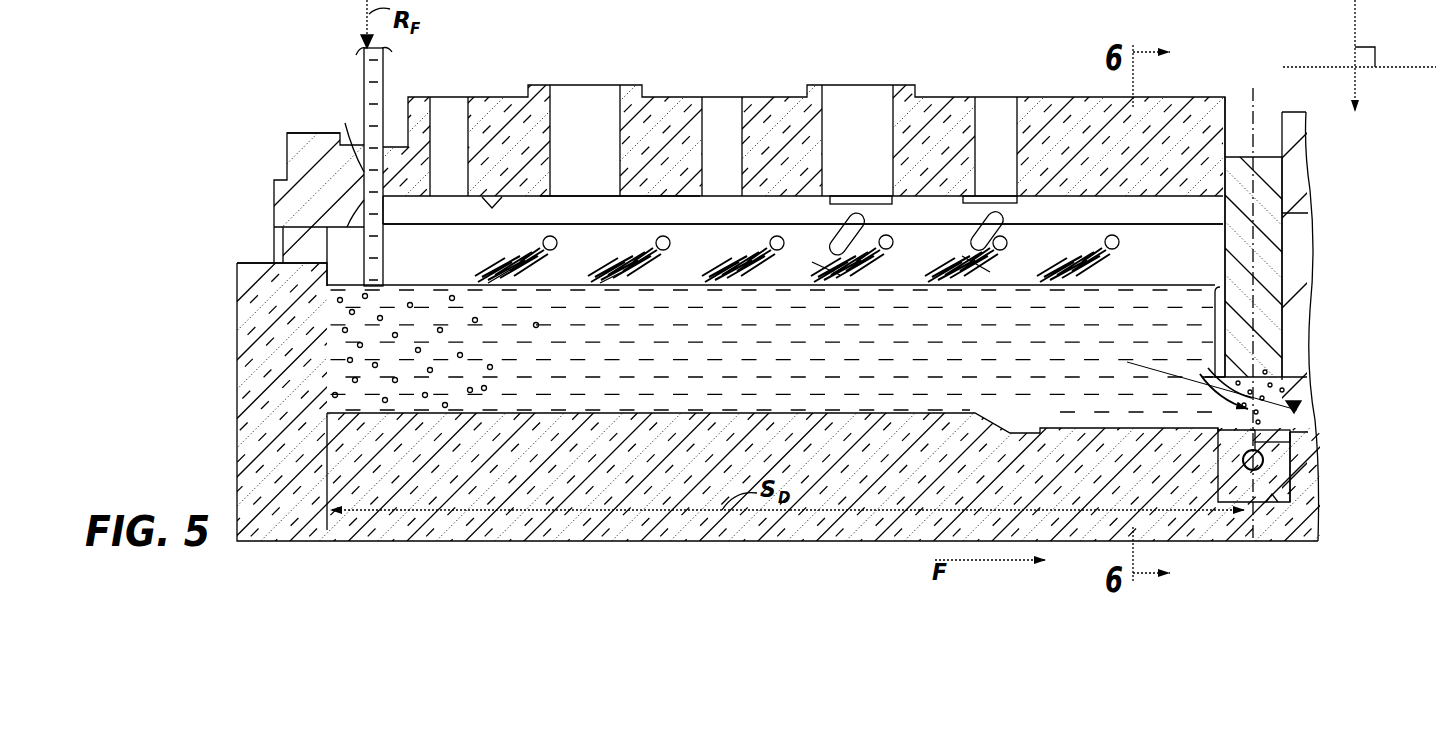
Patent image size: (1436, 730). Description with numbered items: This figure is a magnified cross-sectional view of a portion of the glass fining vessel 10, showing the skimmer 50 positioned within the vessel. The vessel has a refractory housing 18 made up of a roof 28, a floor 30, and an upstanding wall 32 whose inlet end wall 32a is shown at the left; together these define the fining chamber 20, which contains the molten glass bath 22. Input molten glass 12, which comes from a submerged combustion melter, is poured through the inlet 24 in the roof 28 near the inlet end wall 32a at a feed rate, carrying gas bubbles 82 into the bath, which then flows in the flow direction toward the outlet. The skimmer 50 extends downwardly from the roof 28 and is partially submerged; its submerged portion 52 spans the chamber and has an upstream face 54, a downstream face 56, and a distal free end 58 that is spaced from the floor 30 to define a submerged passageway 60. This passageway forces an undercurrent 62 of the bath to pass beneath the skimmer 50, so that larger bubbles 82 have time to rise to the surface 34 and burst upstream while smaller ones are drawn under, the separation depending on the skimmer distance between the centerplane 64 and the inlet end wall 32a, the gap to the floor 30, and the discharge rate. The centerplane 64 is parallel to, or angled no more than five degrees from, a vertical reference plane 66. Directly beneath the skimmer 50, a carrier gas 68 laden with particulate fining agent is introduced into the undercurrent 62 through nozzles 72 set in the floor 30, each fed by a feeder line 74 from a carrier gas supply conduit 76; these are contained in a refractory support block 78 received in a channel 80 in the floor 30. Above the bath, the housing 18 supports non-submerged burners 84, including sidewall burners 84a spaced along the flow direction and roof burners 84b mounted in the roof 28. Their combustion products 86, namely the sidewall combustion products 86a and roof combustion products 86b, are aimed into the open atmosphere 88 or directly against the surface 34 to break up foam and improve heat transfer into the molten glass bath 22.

The glass fining vessel 10 is at (296, 120).
The input molten glass 12 is at (383, 82).
The housing 18 is at (274, 210).
The fining chamber 20 is at (492, 205).
The molten glass bath 22 is at (981, 344).
The inlet 24 is at (362, 147).
The roof 28 is at (682, 115).
The floor 30 is at (567, 544).
The upstanding wall 32 is at (270, 343).
The inlet end wall 32a is at (256, 297).
The surface of the molten glass bath 34 is at (563, 283).
The skimmer 50 is at (1218, 207).
The submerged portion 52 is at (1213, 323).
The upstream face 54 is at (1218, 286).
The downstream face 56 is at (1283, 298).
The distal free end 58 is at (1274, 385).
The submerged passageway 60 is at (1219, 432).
The undercurrent 62 is at (1178, 394).
The centerplane 64 is at (1253, 97).
The vertical reference plane 66 is at (1355, 23).
The carrier gas 68 is at (1211, 380).
The nozzles 72 is at (1259, 422).
The feeder line 74 is at (1260, 442).
The carrier gas supply conduit 76 is at (1264, 462).
The refractory support block 78 is at (1283, 494).
The channel 80 is at (1273, 504).
The gas bubbles 82 is at (458, 294).
The non-submerged burners 84 is at (578, 230).
The sidewall burners 84a is at (556, 237).
The roof burners 84b is at (832, 205).
The combustion products 86 is at (799, 288).
The combustion products of sidewall burners 86a is at (512, 268).
The combustion products of roof burners 86b is at (812, 258).
The open atmosphere 88 is at (646, 244).